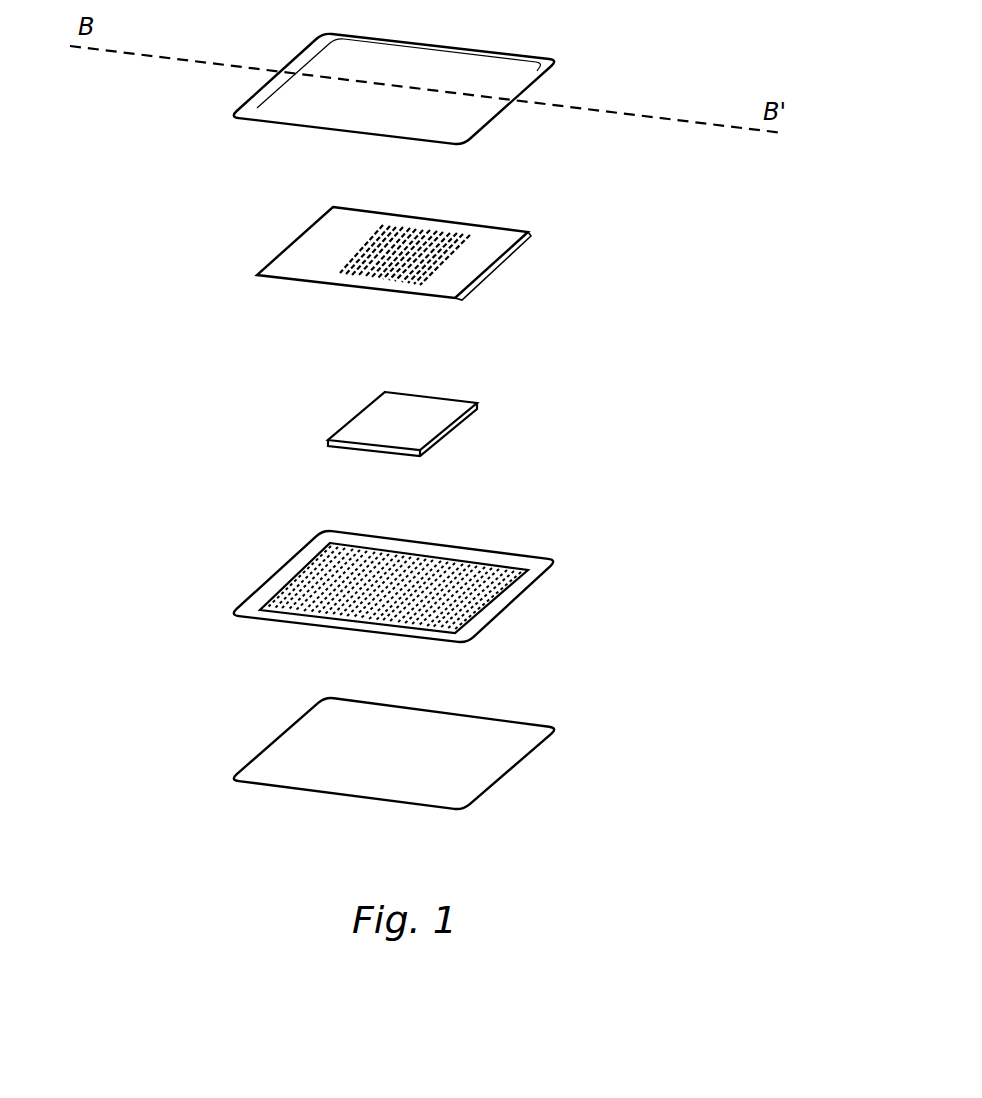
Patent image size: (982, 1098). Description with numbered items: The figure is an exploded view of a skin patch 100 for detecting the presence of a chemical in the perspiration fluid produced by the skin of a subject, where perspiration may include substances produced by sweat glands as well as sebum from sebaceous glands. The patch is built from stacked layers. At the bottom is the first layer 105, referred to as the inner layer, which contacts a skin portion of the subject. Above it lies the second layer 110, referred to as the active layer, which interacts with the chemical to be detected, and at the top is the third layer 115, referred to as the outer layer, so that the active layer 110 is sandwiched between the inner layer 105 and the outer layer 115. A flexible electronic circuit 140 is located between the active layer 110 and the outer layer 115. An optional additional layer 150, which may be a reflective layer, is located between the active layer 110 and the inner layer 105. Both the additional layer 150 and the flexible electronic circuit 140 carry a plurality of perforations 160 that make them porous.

The skin patch 100 is at (127, 690).
The first layer 105 is at (522, 750).
The second layer 110 is at (445, 413).
The third layer 115 is at (531, 75).
The flexible electronic circuit 140 is at (495, 250).
The additional layer 150 is at (538, 573).
The perforations 160 is at (343, 268).